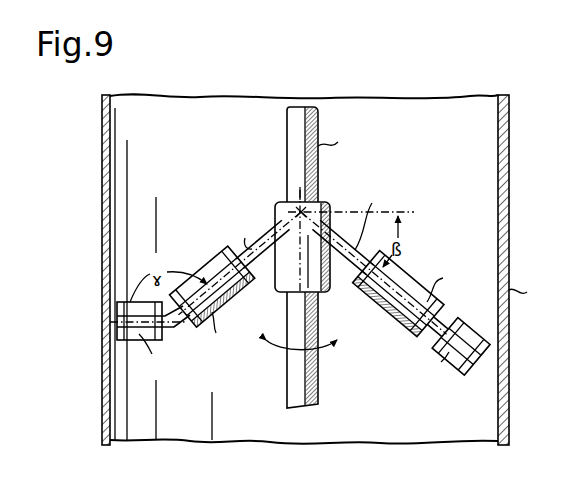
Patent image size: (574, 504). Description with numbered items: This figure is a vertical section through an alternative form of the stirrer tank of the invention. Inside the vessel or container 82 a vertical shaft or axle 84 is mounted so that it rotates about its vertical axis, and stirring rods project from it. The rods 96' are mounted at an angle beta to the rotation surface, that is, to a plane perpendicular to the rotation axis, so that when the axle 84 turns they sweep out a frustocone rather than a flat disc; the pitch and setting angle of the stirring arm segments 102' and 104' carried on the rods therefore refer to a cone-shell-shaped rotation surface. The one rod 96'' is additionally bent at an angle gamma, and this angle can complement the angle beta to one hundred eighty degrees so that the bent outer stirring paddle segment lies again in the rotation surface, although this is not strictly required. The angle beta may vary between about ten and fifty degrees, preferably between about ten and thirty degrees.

The vessel or container 82 is at (327, 269).
The vertical shaft or axle 84 is at (324, 257).
The rod 96' is at (376, 216).
The rod 96'' is at (249, 233).
The stirring arm segment 102' is at (147, 339).
The stirring arm segment 104' is at (212, 301).